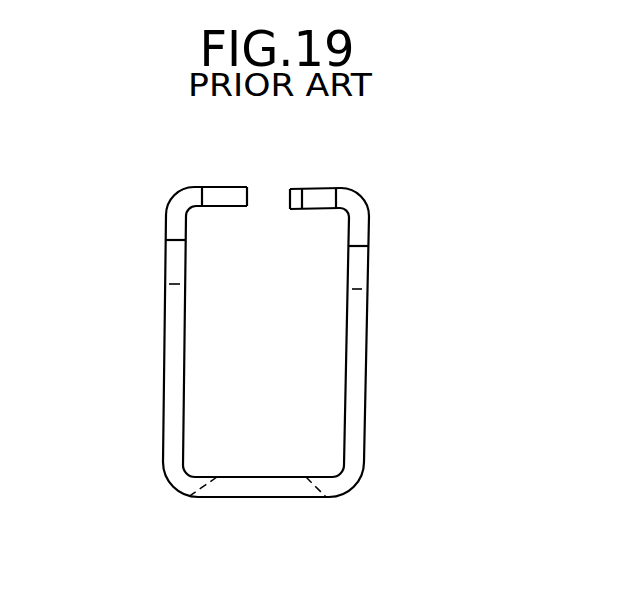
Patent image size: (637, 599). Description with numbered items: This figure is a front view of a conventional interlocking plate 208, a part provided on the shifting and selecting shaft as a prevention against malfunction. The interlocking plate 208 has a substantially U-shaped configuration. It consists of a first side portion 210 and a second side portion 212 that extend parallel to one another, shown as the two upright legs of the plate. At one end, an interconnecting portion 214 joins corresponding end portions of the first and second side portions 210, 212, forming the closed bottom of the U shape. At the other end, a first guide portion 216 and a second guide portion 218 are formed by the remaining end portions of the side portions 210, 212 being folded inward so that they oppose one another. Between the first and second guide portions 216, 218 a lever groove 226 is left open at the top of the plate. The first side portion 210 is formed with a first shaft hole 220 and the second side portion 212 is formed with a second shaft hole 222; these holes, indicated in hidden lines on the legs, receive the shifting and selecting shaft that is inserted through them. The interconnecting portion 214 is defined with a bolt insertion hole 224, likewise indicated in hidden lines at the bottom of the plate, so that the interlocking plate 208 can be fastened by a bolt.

The interlocking plate 208 is at (378, 205).
The first side portion 210 is at (355, 407).
The second side portion 212 is at (164, 405).
The interconnecting portion 214 is at (190, 490).
The first guide portion 216 is at (317, 196).
The second guide portion 218 is at (217, 195).
The first shaft hole 220 is at (353, 369).
The second shaft hole 222 is at (177, 368).
The bolt insertion hole 224 is at (305, 481).
The lever groove 226 is at (270, 195).